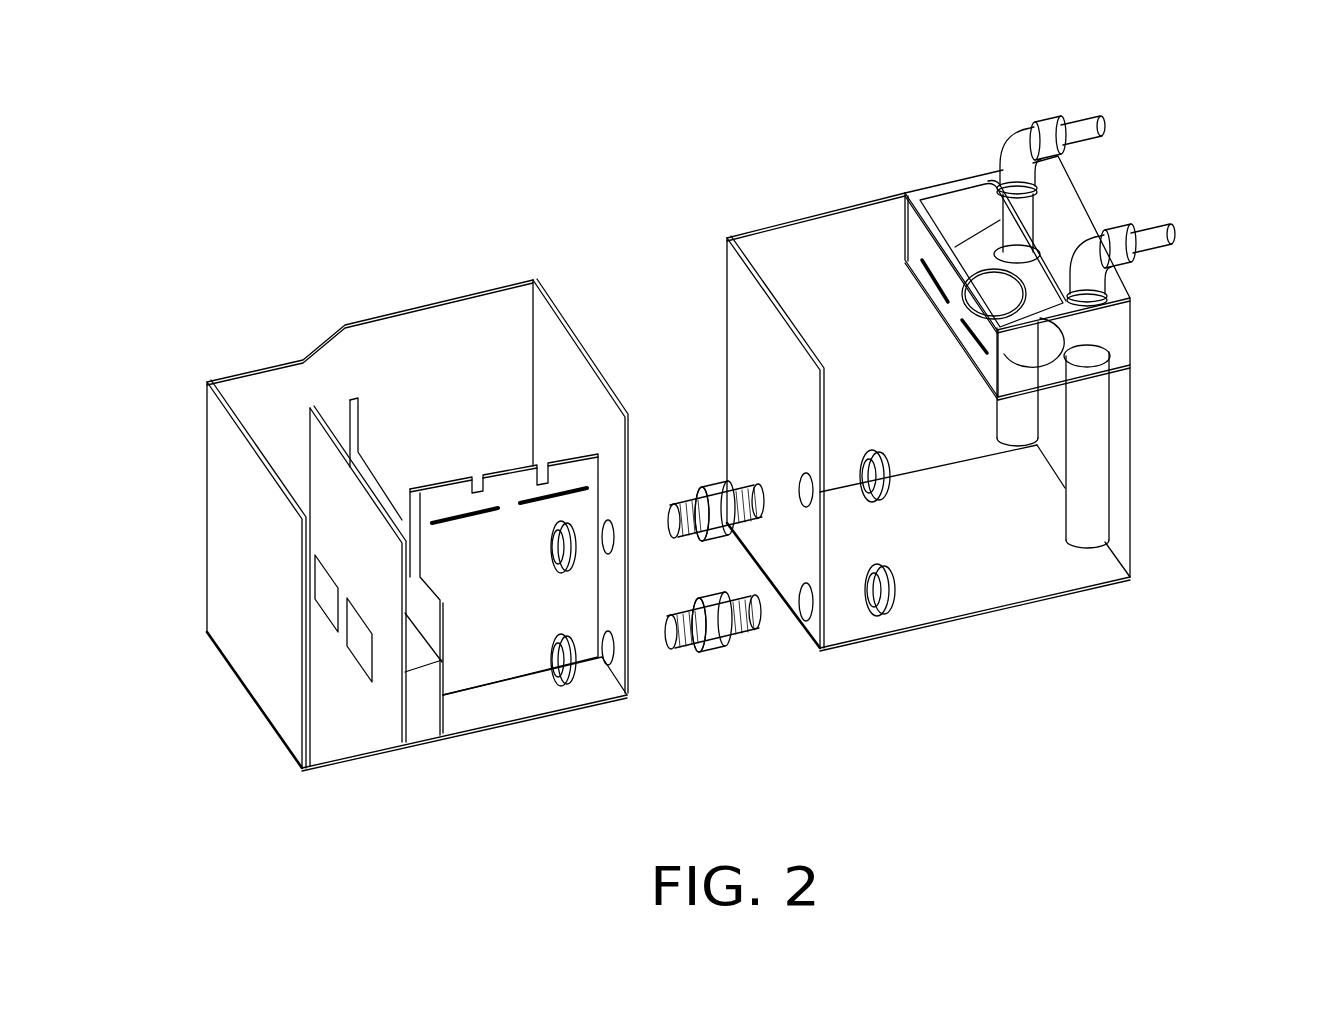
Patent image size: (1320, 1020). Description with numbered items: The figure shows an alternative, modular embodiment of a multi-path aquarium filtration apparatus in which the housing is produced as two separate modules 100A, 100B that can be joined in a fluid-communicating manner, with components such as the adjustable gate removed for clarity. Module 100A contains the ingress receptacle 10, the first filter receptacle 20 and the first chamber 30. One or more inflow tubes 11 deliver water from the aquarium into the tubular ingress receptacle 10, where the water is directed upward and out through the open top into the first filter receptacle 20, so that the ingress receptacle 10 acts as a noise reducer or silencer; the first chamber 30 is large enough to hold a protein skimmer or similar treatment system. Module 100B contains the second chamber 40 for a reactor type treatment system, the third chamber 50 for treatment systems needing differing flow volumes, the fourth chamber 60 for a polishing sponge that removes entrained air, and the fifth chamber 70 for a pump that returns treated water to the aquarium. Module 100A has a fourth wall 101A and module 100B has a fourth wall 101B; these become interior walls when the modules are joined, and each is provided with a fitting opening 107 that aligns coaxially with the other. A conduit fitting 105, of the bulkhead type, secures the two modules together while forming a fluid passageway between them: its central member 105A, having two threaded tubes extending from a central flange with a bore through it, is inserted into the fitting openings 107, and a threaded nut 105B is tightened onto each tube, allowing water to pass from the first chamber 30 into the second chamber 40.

The ingress receptacle 10 is at (1112, 515).
The inflow tube 11 is at (1180, 222).
The first filter receptacle 20 is at (965, 215).
The first chamber 30 is at (832, 257).
The second chamber 40 is at (503, 712).
The third chamber 50 is at (448, 393).
The fourth chamber 60 is at (333, 407).
The fifth chamber 70 is at (275, 427).
The module 100A is at (942, 382).
The module 100B is at (394, 482).
The fourth wall 101A is at (752, 311).
The fourth wall 101B is at (558, 347).
The conduit fitting 105 is at (708, 475).
The central member 105A is at (731, 547).
The threaded nut 105B is at (548, 657).
The fitting opening 107 is at (602, 545).